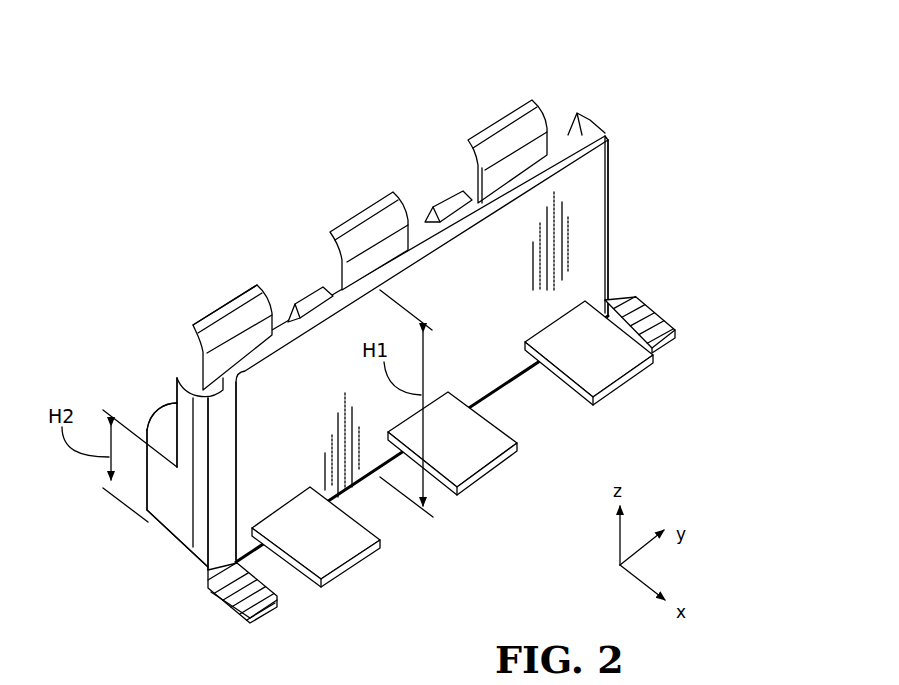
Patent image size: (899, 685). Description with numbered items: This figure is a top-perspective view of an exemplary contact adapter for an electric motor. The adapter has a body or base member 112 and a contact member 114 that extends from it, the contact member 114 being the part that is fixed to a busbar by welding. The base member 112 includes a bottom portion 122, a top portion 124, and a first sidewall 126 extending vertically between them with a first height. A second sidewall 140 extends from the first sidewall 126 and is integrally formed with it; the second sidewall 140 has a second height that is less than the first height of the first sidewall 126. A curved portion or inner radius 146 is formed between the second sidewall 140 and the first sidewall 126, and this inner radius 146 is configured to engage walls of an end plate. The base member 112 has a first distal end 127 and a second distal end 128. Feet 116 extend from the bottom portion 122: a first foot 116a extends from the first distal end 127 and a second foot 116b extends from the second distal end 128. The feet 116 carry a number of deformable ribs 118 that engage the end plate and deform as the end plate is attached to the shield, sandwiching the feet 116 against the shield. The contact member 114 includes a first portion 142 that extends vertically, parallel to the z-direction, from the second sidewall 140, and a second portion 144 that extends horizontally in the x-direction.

The base member 112 is at (136, 412).
The contact member 114 is at (196, 308).
The feet 116 is at (457, 462).
The first foot 116a is at (227, 610).
The second foot 116b is at (678, 338).
The deformable ribs 118 is at (270, 607).
The bottom portion 122 is at (507, 381).
The top portion 124 is at (458, 212).
The first sidewall 126 is at (609, 160).
The first distal end 127 is at (170, 500).
The second distal end 128 is at (609, 218).
The second sidewall 140 is at (163, 417).
The first portion 142 is at (248, 293).
The second portion 144 is at (630, 386).
The inner radius 146 is at (220, 487).